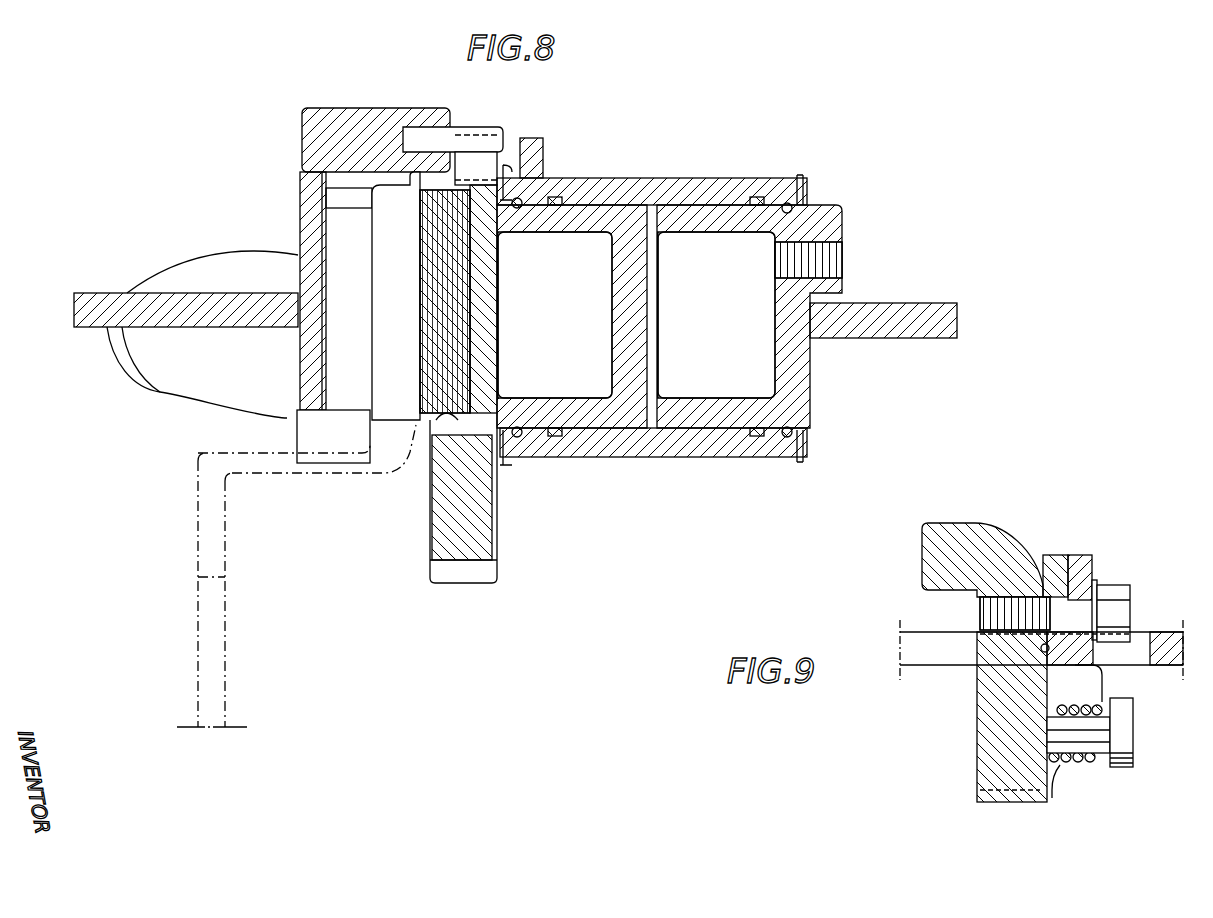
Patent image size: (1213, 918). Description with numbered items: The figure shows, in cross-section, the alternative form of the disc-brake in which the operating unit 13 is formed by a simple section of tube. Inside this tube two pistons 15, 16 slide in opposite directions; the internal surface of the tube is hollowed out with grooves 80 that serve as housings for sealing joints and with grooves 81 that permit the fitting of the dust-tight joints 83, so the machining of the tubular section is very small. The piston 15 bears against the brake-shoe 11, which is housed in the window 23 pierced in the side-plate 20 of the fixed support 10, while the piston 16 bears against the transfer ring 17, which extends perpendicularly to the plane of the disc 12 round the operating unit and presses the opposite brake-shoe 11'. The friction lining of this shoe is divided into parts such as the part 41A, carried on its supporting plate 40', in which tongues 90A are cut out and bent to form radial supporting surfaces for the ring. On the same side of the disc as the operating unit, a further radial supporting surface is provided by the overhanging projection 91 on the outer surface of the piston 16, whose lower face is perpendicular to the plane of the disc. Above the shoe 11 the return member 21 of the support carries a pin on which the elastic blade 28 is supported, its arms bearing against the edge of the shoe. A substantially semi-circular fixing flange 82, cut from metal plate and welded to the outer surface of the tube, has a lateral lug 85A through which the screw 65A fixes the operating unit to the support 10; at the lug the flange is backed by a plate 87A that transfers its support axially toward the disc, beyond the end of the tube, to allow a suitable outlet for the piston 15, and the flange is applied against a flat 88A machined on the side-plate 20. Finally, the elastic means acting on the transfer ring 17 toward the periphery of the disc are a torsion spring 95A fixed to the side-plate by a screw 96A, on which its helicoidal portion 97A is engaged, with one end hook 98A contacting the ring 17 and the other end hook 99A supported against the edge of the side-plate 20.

In FIG. 8, the fixed support 10 is at (502, 550).
In FIG. 9, the fixed support 10 is at (946, 519).
In FIG. 8, the brake-shoe 11 is at (495, 299).
In FIG. 8, the brake-shoe 11' is at (267, 290).
In FIG. 8, the disc 12 is at (410, 182).
In FIG. 8, the operating unit 13 is at (652, 178).
In FIG. 8, the piston 15 is at (594, 418).
In FIG. 8, the piston 16 is at (686, 425).
In FIG. 8, the transfer ring 17 is at (964, 300).
In FIG. 9, the transfer ring 17 is at (896, 630).
In FIG. 8, the side-plate 20 is at (446, 540).
In FIG. 9, the side-plate 20 is at (976, 788).
In FIG. 8, the return member 21 is at (358, 150).
In FIG. 8, the window 23 is at (440, 424).
In FIG. 8, the elastic blade 28 is at (463, 163).
In FIG. 8, the supporting plate 40' is at (274, 297).
In FIG. 8, the friction lining part 41A is at (340, 222).
In FIG. 8, the grooves 80 is at (550, 424).
In FIG. 8, the grooves 81 is at (546, 196).
In FIG. 8, the fixing flange 82 is at (537, 140).
In FIG. 9, the fixing flange 82 is at (1081, 553).
In FIG. 8, the dust-tight joints 83 is at (505, 165).
In FIG. 8, the tongue 90A is at (283, 291).
In FIG. 8, the overhanging projection 91 is at (850, 303).
In FIG. 9, the screw 65A is at (1125, 600).
In FIG. 9, the lug 85A is at (1096, 585).
In FIG. 9, the plate 87A is at (1052, 555).
In FIG. 9, the flat 88A is at (1043, 656).
In FIG. 9, the torsion spring 95A is at (1082, 705).
In FIG. 9, the screw 96A is at (1126, 738).
In FIG. 9, the helicoidal portion 97A is at (1092, 762).
In FIG. 9, the end hook 98A is at (1098, 666).
In FIG. 9, the end hook 99A is at (1053, 788).